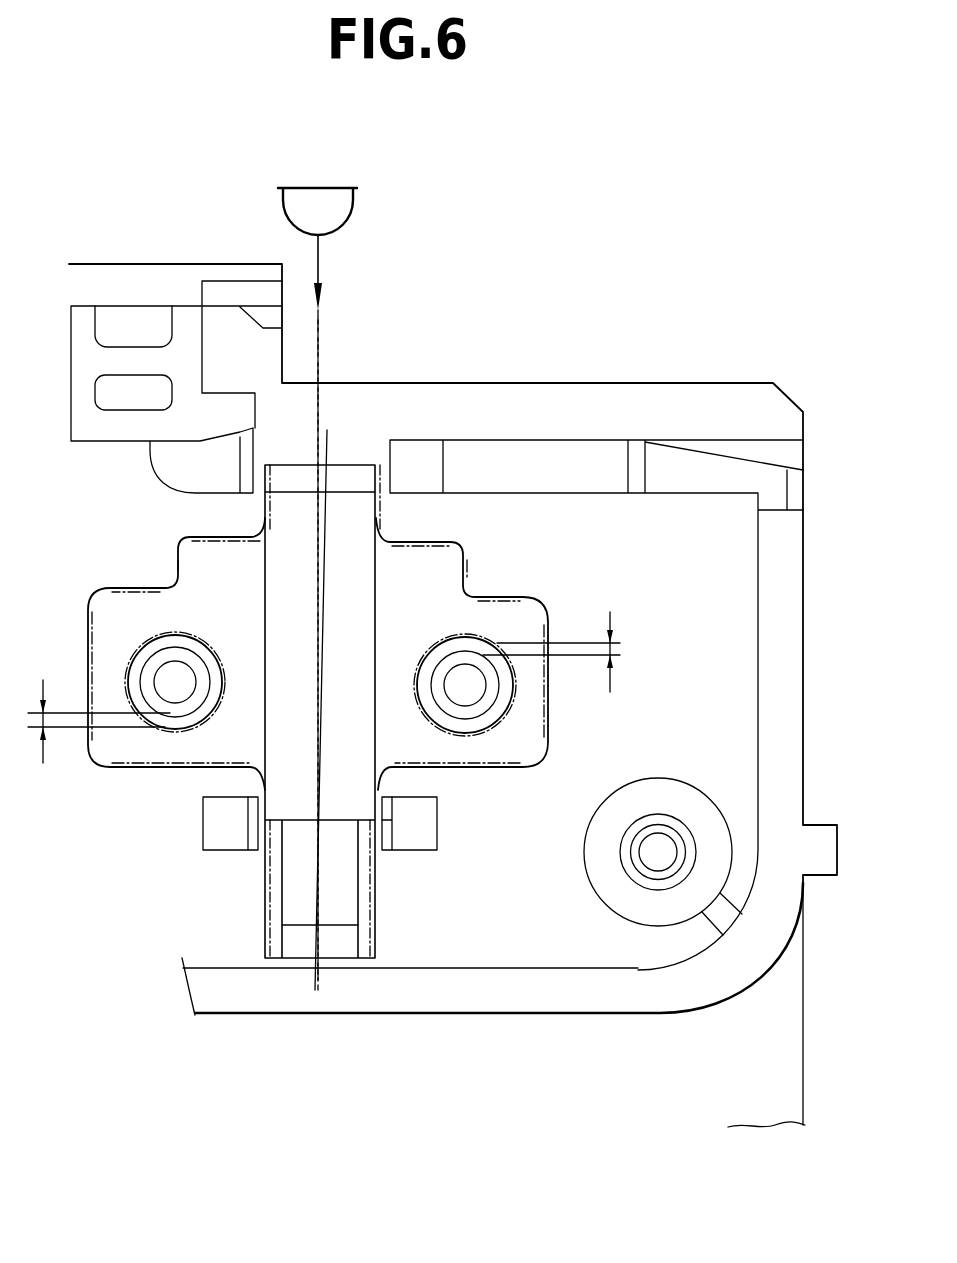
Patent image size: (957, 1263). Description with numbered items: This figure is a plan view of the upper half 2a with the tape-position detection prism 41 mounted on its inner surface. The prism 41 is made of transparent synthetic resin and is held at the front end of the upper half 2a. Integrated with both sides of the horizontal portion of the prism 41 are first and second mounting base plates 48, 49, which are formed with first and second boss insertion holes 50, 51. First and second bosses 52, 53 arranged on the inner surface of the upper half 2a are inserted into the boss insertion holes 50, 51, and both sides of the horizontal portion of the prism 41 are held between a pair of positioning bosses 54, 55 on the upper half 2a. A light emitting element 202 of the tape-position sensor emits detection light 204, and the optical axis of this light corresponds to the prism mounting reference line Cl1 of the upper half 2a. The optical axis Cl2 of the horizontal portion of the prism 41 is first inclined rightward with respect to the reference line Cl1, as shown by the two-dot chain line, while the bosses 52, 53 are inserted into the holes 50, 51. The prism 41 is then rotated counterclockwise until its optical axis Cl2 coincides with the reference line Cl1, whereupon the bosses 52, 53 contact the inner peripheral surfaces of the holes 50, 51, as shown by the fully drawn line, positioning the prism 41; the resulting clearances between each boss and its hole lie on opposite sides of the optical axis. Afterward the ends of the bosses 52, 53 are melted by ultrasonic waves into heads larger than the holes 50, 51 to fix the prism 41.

The upper half 2a is at (667, 380).
The light emitting element 202 is at (353, 203).
The detection light 204 is at (318, 262).
The prism mounting reference line Cl1 is at (317, 403).
The optical axis of the prism Cl2 is at (330, 440).
The tape-position detection prism 41 is at (314, 683).
The first mounting base plate 48 is at (492, 615).
The second mounting base plate 49 is at (135, 608).
The first boss insertion hole 50 is at (497, 660).
The second boss insertion hole 51 is at (135, 668).
The first boss 52 is at (473, 712).
The second boss 53 is at (165, 705).
The positioning boss 54 is at (413, 832).
The positioning boss 55 is at (228, 832).